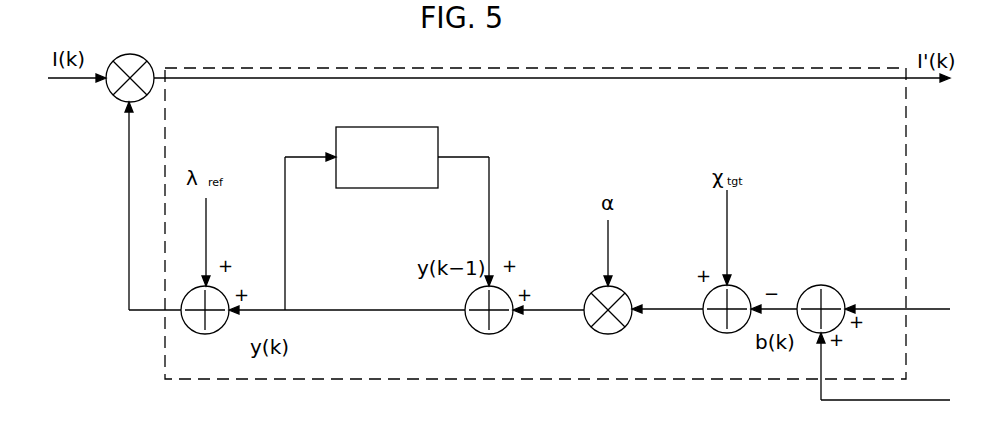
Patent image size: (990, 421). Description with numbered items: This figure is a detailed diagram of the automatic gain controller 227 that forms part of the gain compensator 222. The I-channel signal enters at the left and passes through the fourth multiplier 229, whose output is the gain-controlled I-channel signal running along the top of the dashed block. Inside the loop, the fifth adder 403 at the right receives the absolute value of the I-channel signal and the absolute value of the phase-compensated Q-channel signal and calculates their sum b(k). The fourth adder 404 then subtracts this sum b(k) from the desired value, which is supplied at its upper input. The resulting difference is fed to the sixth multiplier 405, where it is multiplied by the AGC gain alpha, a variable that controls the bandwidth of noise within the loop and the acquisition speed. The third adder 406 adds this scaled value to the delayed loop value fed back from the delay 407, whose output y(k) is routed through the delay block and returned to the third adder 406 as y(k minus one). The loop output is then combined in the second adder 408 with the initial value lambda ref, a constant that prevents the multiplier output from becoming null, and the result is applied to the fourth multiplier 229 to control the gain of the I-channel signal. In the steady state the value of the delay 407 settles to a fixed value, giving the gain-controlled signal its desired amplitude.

The gain compensator 222 is at (781, 28).
The automatic gain controller 227 is at (852, 67).
The fourth multiplier 229 is at (148, 61).
The fifth adder 403 is at (837, 329).
The fourth adder 404 is at (744, 292).
The sixth multiplier 405 is at (625, 293).
The third adder 406 is at (506, 293).
The delay 407 is at (388, 127).
The second adder 408 is at (222, 293).